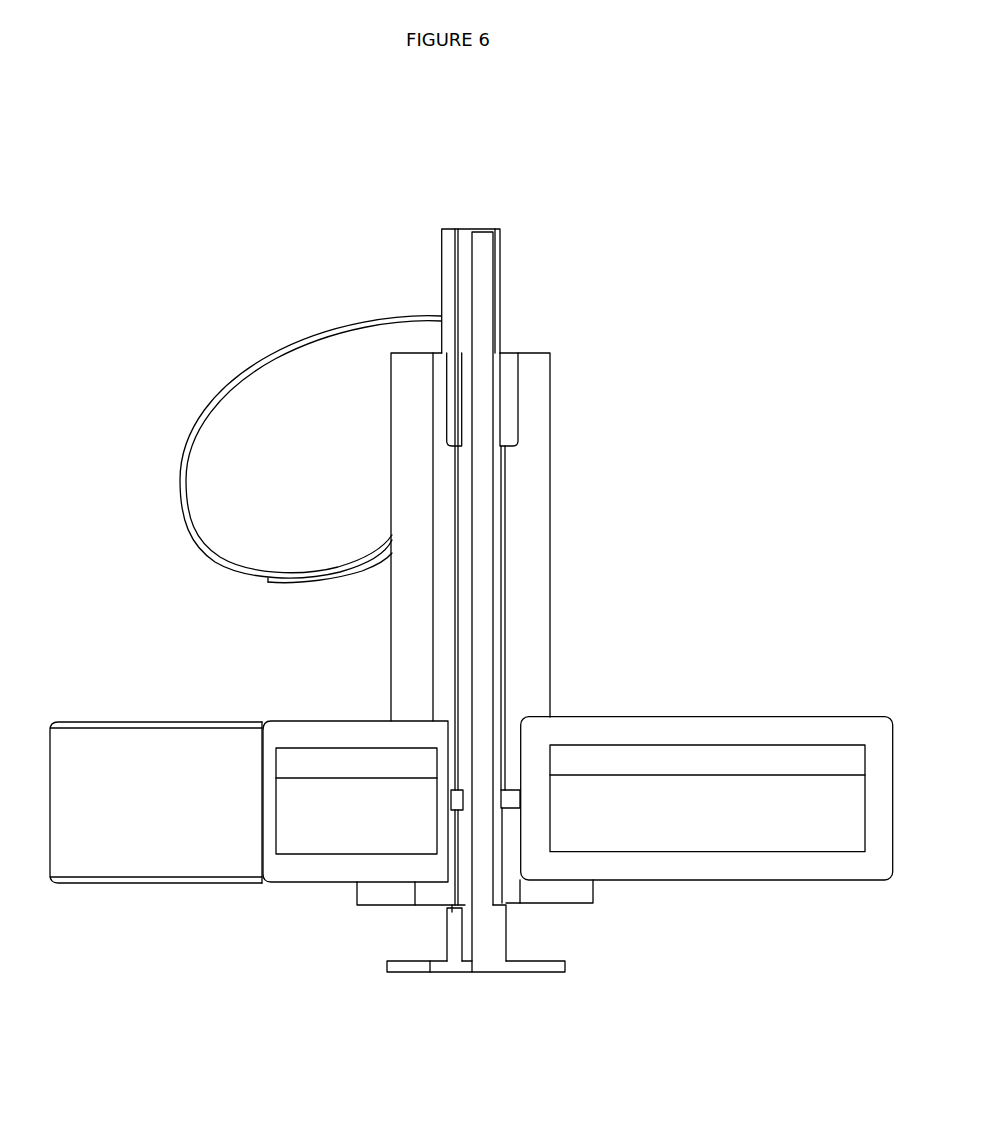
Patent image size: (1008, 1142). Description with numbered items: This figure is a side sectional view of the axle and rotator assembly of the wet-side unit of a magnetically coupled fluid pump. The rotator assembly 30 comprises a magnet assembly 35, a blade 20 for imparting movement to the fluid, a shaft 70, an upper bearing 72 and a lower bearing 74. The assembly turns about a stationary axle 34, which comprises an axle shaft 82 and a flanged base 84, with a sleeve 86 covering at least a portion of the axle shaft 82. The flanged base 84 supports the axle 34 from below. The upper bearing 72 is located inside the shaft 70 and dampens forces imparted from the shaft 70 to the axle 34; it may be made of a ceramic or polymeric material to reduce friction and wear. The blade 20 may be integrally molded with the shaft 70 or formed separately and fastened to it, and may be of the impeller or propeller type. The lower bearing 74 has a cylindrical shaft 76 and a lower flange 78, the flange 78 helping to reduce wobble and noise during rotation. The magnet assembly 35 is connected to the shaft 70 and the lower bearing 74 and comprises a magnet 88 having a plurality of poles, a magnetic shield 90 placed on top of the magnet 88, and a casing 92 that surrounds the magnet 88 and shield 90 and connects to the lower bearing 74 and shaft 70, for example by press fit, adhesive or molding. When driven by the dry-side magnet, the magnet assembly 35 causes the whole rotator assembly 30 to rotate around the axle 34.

The blade 20 is at (260, 413).
The rotator assembly 30 is at (756, 299).
The axle 34 is at (441, 255).
The magnet assembly 35 is at (131, 722).
The shaft 70 is at (540, 457).
The upper bearing 72 is at (512, 371).
The lower bearing 74 is at (577, 905).
The cylindrical shaft 76 is at (511, 857).
The lower flange 78 is at (405, 898).
The shaft 82 is at (479, 249).
The flanged base 84 is at (537, 967).
The sleeve 86 is at (498, 263).
The magnet 88 is at (750, 817).
The magnetic shield 90 is at (649, 758).
The casing 92 is at (761, 723).